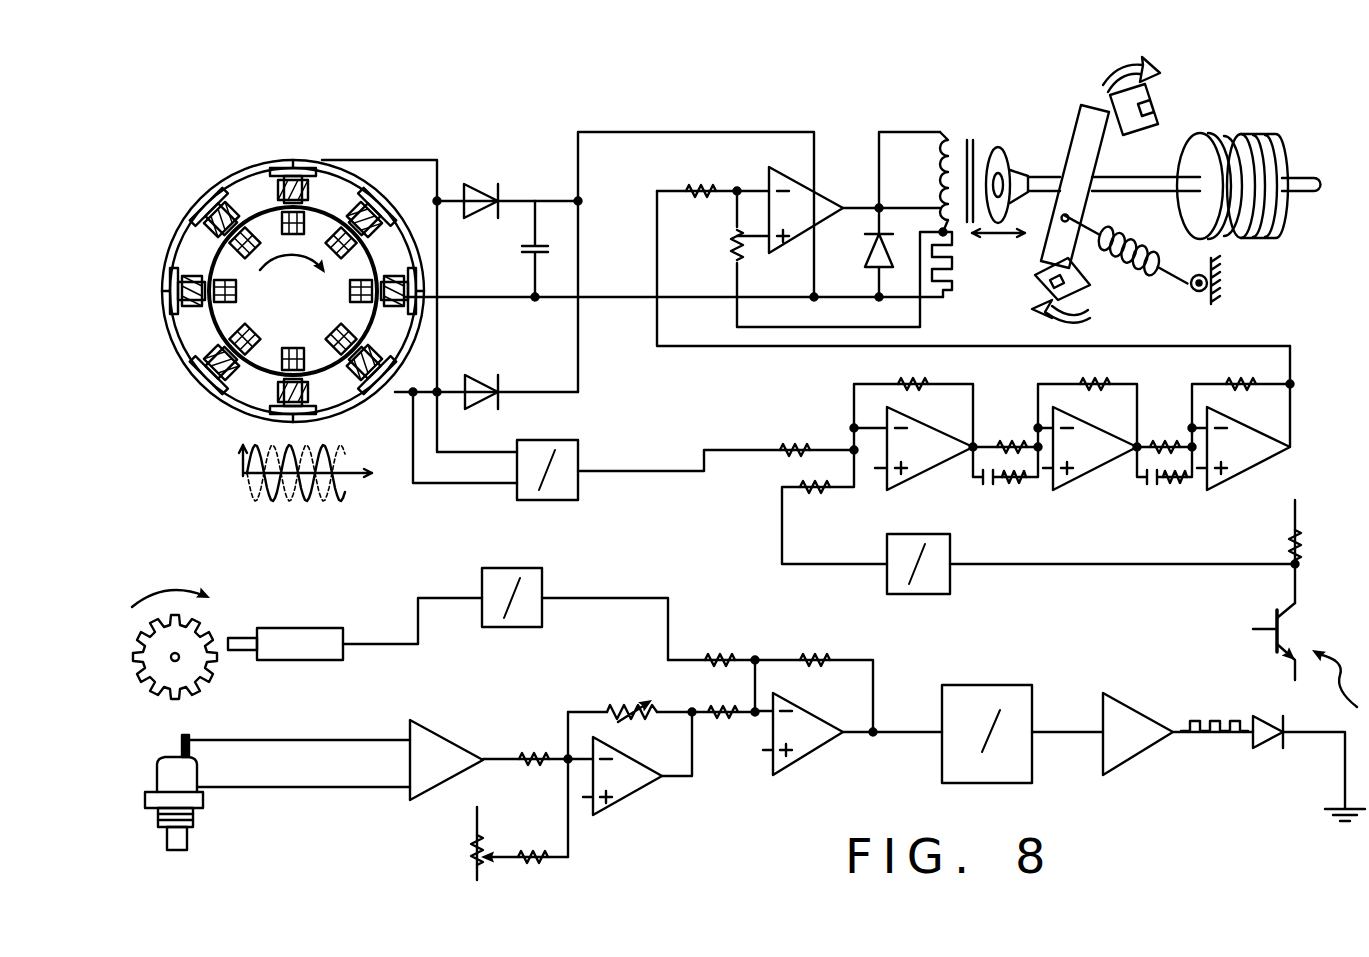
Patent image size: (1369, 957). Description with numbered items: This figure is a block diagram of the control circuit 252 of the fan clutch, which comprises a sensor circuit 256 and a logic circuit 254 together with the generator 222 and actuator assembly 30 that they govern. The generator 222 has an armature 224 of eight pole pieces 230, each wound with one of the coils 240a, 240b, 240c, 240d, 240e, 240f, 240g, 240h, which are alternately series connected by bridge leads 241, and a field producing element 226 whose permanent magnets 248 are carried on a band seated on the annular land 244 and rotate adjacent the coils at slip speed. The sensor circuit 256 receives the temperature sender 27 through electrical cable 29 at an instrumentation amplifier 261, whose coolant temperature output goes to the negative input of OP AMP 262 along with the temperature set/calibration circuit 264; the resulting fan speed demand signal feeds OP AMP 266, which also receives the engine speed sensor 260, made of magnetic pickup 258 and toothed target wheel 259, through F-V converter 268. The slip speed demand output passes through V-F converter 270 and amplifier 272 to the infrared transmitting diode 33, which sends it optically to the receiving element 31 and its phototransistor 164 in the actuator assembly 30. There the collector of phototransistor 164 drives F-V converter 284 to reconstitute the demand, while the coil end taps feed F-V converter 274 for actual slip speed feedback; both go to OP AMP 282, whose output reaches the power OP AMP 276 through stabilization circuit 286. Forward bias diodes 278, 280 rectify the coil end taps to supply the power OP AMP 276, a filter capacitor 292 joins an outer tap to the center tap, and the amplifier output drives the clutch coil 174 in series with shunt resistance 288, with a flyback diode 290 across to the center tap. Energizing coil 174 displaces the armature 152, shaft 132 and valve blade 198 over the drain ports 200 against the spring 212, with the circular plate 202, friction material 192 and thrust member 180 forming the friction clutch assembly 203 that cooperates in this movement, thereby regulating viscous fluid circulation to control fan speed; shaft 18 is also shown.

The shaft 18 is at (1298, 196).
The remote temperature switch or sender 27 is at (158, 775).
The electrical cable 29 is at (252, 742).
The actuator assembly 30 is at (964, 126).
The optical receiving circuit element 31 is at (1258, 647).
The optical transmitting circuit element 33 is at (1268, 750).
The shaft 132 is at (1112, 178).
The armature 152 is at (997, 142).
The phototransistor 164 is at (1293, 626).
The coil 174 is at (938, 178).
The thrust member 180 is at (1280, 150).
The friction material 192 is at (1213, 128).
The valve blade 198 is at (1043, 242).
The drain ports 200 is at (1148, 105).
The circular plate 202 is at (1218, 136).
The clutch assembly 203 is at (1264, 256).
The coil spring 212 is at (1140, 248).
The generator 222 is at (175, 452).
The armature 224 is at (174, 212).
The electromagnetic field producing element 226 is at (405, 257).
The pole pieces 230 is at (270, 197).
The coil 240a is at (340, 395).
The coil 240b is at (250, 405).
The coil 240c is at (190, 345).
The coil 240d is at (190, 255).
The coil 240e is at (240, 197).
The coil 240f is at (337, 187).
The coil 240g is at (386, 207).
The coil 240h is at (398, 318).
The bridge leads 241 is at (292, 165).
The annular land 244 is at (288, 280).
The permanent magnets 248 is at (293, 291).
The control circuit 252 is at (1185, 830).
The logic circuit 254 is at (442, 503).
The sensor circuit 256 is at (330, 576).
The magnetic pickup 258 is at (290, 640).
The toothed target wheel 259 is at (212, 683).
The magnetic engine speed sensor 260 is at (226, 622).
The instrumentation type amplifier 261 is at (450, 742).
The operational amplifier 262 is at (628, 792).
The temperature set/calibration circuit 264 is at (547, 862).
The OP AMP 266 is at (805, 757).
The frequency to voltage converter 268 is at (545, 627).
The voltage to frequency converter 270 is at (968, 785).
The amplifier 272 is at (1133, 758).
The F-V converter 274 is at (578, 462).
The power OP AMP 276 is at (760, 172).
The forward bias diode 278 is at (472, 190).
The forward bias diode 280 is at (486, 382).
The OP AMP 282 is at (935, 468).
The F-V converter 284 is at (950, 578).
The speed loop signal stabilization circuit 286 is at (1202, 504).
The shunt resistance 288 is at (950, 297).
The flyback diode 290 is at (875, 258).
The filter capacitor 292 is at (524, 258).